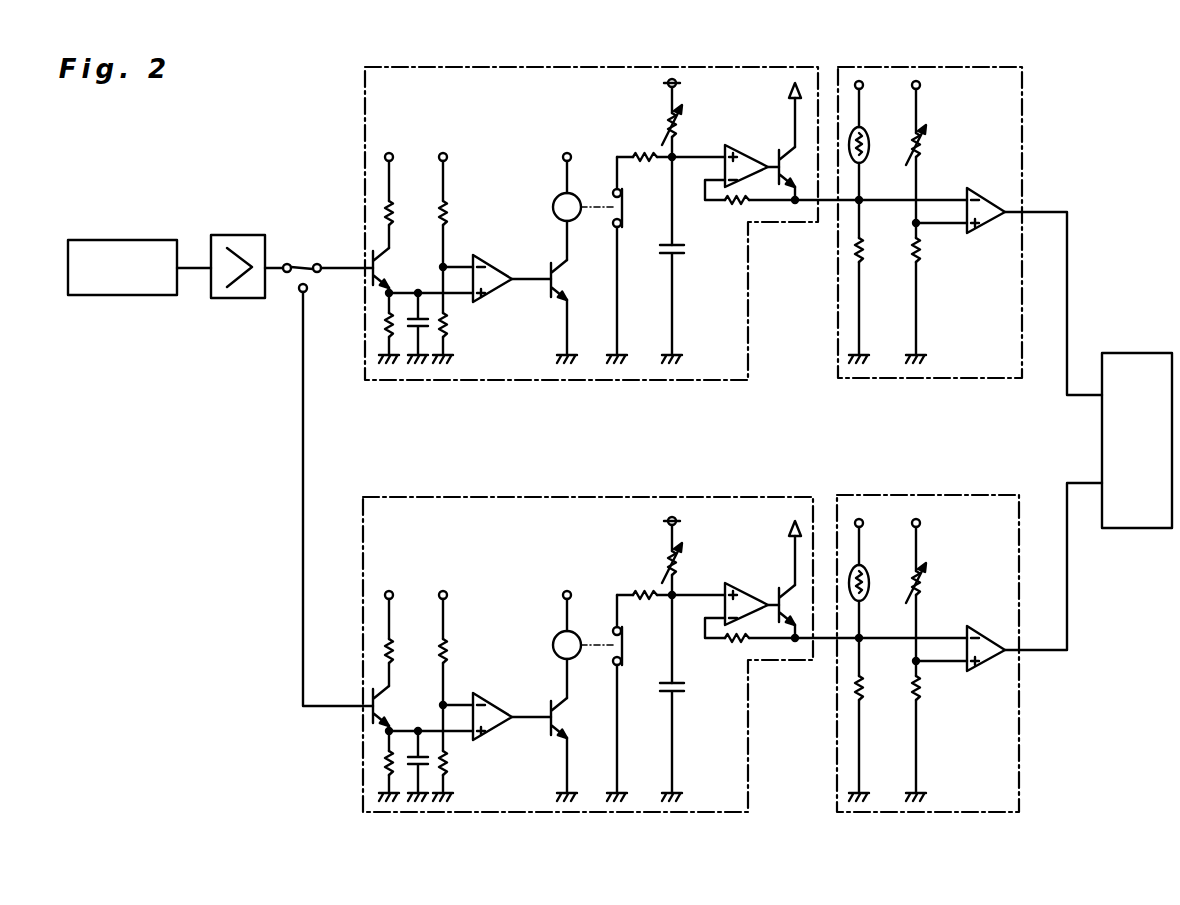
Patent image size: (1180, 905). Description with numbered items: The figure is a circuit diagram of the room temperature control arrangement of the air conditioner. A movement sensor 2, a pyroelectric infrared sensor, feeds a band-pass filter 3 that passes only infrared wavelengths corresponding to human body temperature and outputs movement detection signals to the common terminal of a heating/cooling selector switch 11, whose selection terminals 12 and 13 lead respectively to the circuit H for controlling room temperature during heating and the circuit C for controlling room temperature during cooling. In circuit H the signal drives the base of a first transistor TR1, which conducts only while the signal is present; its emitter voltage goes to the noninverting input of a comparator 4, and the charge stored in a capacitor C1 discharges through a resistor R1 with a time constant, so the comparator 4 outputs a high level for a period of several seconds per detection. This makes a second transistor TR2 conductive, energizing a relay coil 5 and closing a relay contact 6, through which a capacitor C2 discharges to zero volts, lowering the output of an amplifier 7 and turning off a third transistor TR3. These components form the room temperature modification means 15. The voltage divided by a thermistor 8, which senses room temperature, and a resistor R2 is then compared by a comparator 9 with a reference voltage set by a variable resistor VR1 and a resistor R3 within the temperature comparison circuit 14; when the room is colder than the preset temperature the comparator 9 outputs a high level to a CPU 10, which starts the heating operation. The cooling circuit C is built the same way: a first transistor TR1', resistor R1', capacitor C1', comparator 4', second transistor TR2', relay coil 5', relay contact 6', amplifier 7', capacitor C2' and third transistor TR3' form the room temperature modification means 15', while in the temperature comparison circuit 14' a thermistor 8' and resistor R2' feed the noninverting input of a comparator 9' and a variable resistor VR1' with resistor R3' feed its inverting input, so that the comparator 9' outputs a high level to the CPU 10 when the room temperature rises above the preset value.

The movement sensor 2 is at (128, 240).
The band-pass filter 3 is at (235, 235).
The heating/cooling selector switch 11 is at (290, 264).
The selection terminal 12 is at (318, 264).
The selection terminal 13 is at (300, 290).
The first transistor TR1 is at (388, 246).
The resistor R1 is at (353, 336).
The capacitor C1 is at (402, 361).
The comparator 4 is at (492, 258).
The second transistor TR2 is at (526, 292).
The relay coil 5 is at (560, 175).
The relay contact 6 is at (666, 258).
The amplifier 7 is at (693, 141).
The capacitor C2 is at (690, 304).
The third transistor TR3 is at (836, 143).
The room temperature modification means 15 is at (595, 207).
The circuit for controlling room temperature during heating operation H is at (556, 207).
The thermistor 8 is at (876, 136).
The variable resistor VR1 is at (961, 159).
The resistor R2 is at (823, 300).
The resistor R3 is at (942, 300).
The comparator 9 is at (1034, 291).
The temperature comparison circuit 14 is at (976, 222).
The CPU 10 is at (1142, 353).
The circuit for controlling room temperature during cooling operation C is at (530, 625).
The room temperature modification means 15' is at (588, 625).
The first transistor TR1' is at (372, 676).
The resistor R1' is at (334, 766).
The capacitor C1' is at (411, 739).
The comparator 4' is at (492, 696).
The second transistor TR2' is at (529, 730).
The relay coil 5' is at (554, 616).
The relay contact 6' is at (666, 696).
The amplifier 7' is at (701, 595).
The capacitor C2' is at (698, 742).
The third transistor TR3' is at (836, 550).
The temperature comparison circuit 14' is at (982, 653).
The thermistor 8' is at (871, 593).
The resistor R2' is at (829, 738).
The variable resistor VR1' is at (951, 591).
The resistor R3' is at (947, 738).
The comparator 9' is at (1034, 577).